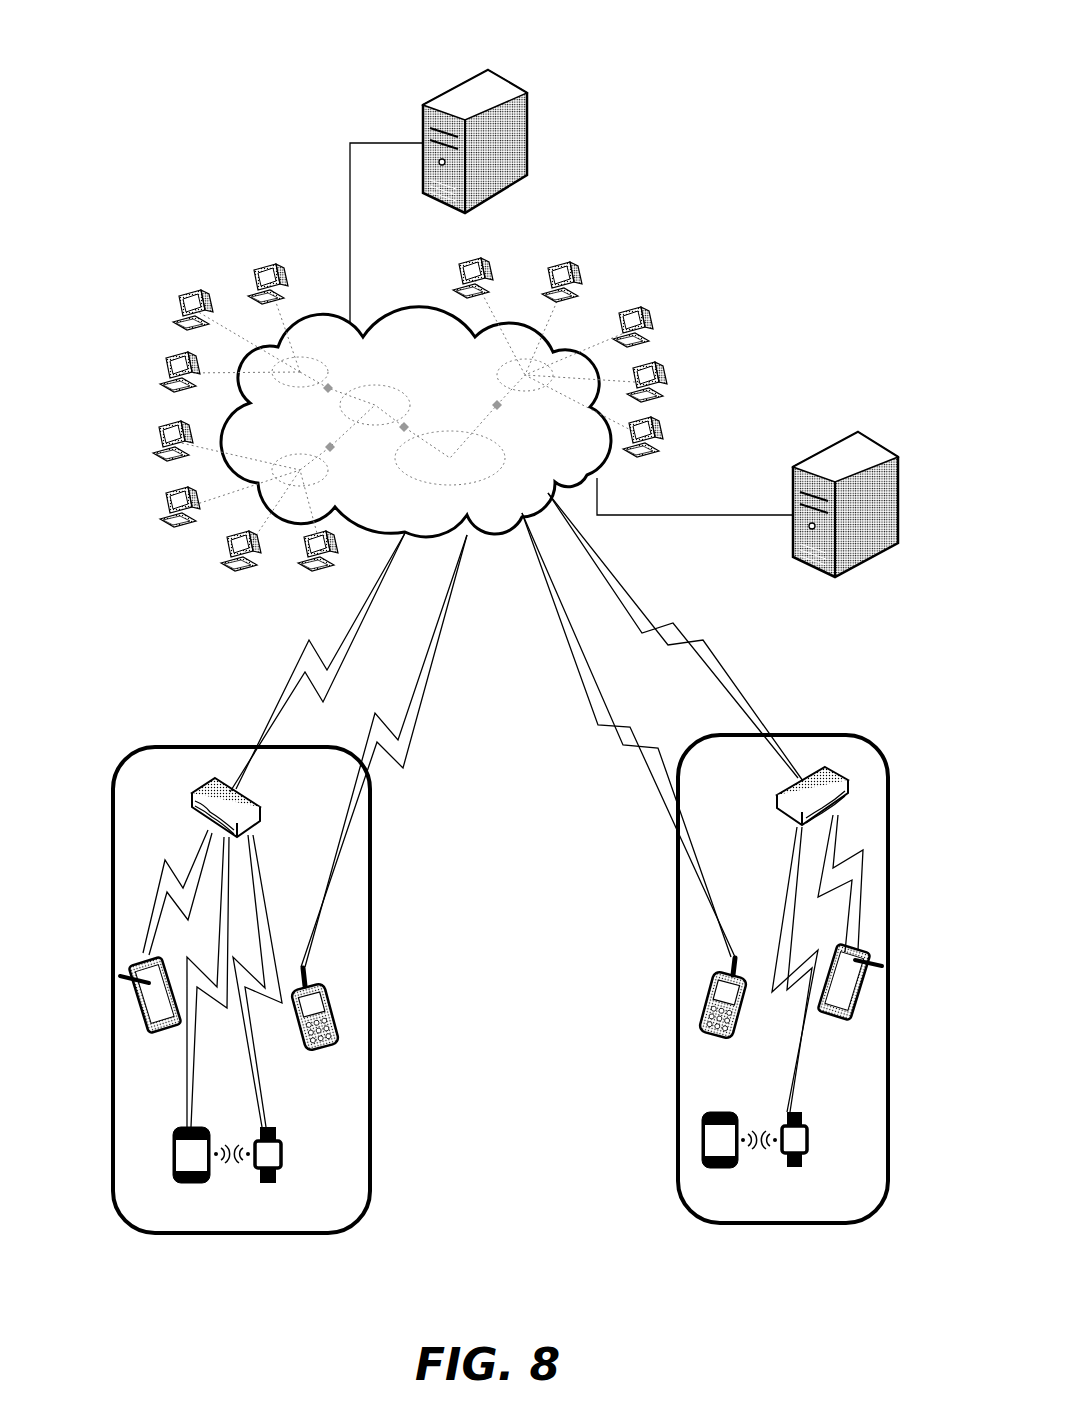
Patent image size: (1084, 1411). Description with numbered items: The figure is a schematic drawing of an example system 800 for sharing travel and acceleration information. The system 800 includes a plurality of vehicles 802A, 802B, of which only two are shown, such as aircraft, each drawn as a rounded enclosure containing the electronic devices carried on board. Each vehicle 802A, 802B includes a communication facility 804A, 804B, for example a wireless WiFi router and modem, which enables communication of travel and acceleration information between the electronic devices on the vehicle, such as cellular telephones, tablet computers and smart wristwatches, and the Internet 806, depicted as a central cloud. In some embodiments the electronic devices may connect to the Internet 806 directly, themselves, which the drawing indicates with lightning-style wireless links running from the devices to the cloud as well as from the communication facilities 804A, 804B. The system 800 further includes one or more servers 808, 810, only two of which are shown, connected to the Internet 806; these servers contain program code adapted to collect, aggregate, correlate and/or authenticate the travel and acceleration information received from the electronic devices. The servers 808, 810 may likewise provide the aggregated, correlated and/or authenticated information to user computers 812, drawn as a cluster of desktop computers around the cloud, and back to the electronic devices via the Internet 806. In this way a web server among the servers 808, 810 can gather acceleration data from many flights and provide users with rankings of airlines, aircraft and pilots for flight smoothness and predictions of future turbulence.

The system 800 is at (283, 80).
The Internet 806 is at (443, 374).
The server 808 is at (872, 440).
The server 810 is at (530, 143).
The user computers 812 is at (483, 257).
The vehicle 802A is at (128, 762).
The vehicle 802B is at (825, 735).
The communication facility 804A is at (300, 802).
The communication facility 804B is at (780, 813).